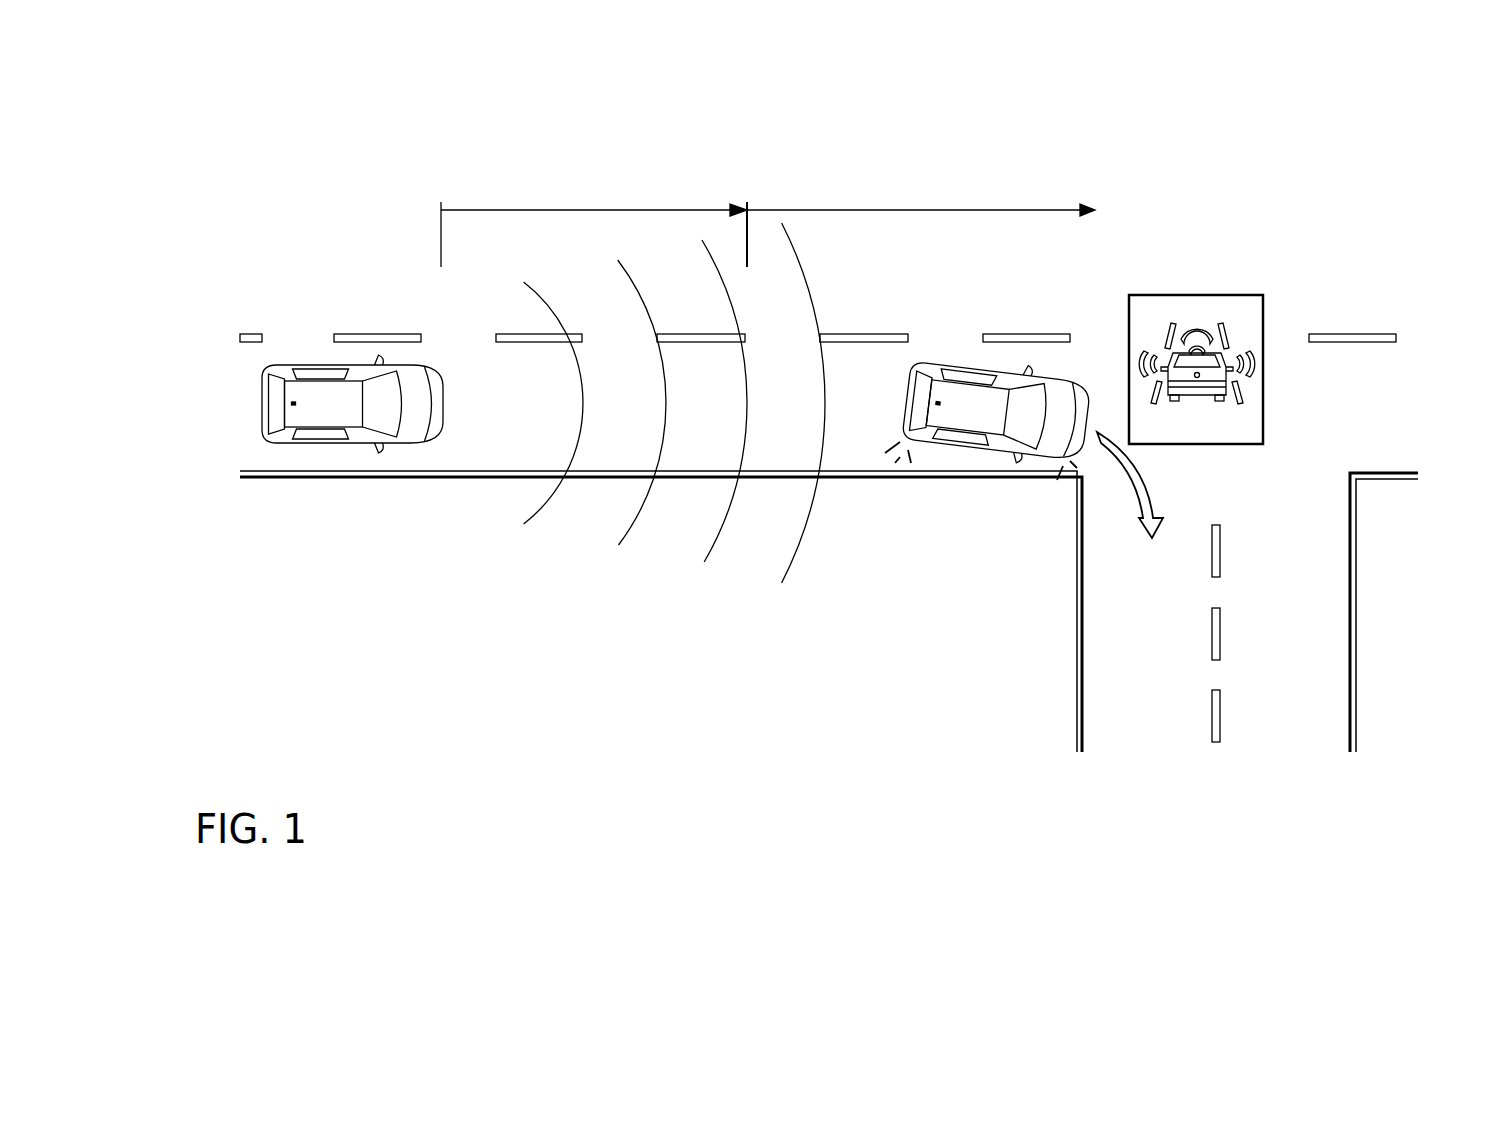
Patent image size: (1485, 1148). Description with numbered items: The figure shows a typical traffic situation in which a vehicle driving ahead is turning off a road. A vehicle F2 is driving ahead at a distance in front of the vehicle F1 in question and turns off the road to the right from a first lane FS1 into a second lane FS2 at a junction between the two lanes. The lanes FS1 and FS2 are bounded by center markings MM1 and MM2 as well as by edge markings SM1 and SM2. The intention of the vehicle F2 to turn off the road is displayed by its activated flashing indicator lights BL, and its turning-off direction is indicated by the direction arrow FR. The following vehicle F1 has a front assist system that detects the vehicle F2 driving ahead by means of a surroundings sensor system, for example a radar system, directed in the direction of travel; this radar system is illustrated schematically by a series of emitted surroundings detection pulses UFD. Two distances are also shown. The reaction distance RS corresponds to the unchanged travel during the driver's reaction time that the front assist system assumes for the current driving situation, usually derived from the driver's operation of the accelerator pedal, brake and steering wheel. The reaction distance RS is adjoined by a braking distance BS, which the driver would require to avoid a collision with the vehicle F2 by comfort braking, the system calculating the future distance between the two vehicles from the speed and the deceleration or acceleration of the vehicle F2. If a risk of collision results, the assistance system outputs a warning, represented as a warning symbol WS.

The vehicle in question F1 is at (316, 382).
The vehicle driving ahead F2 is at (948, 378).
The first lane FS1 is at (512, 370).
The second lane FS2 is at (1127, 653).
The reaction distance RS is at (588, 210).
The braking distance BS is at (858, 210).
The center marking MM1 is at (682, 338).
The center marking MM2 is at (1216, 558).
The edge marking SM1 is at (459, 473).
The edge marking SM2 is at (1082, 726).
The flashing indicator lights BL is at (902, 455).
The surroundings detection pulses UFD is at (547, 503).
The warning symbol WS is at (1197, 297).
The direction arrow FR is at (1148, 496).